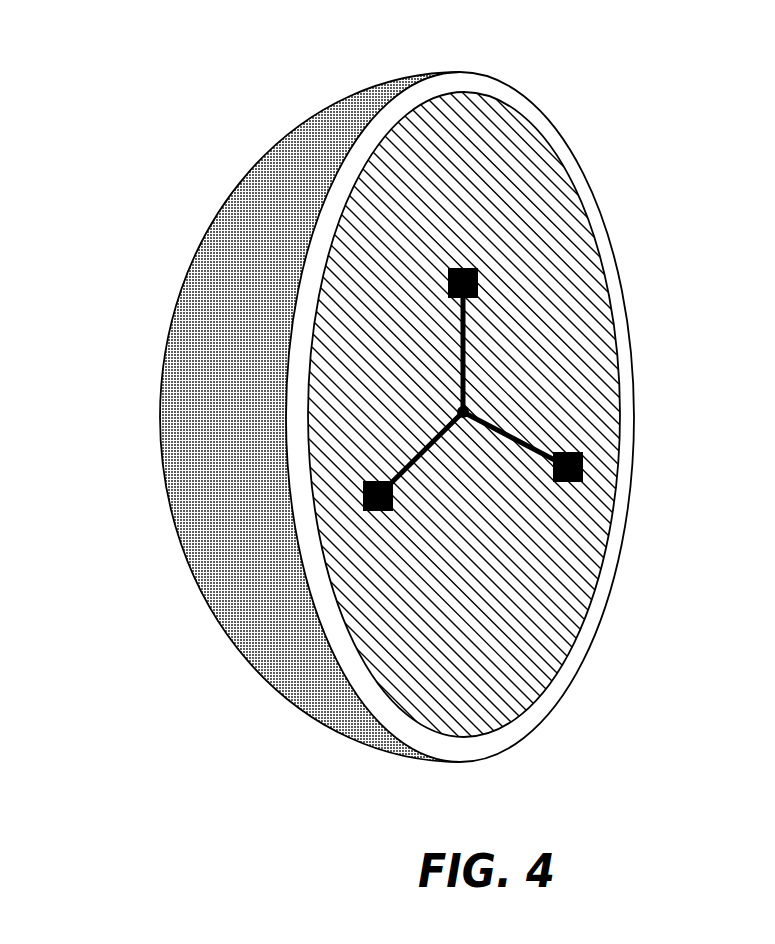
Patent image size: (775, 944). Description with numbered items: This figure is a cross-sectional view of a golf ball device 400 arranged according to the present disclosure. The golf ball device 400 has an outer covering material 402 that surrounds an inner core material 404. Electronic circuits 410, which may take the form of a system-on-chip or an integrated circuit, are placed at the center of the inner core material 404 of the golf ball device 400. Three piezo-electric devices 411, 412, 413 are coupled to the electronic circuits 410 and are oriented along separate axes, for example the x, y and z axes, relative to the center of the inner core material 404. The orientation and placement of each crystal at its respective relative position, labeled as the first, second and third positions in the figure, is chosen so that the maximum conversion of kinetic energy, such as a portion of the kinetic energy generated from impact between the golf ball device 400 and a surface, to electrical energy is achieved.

The golf ball device 400 is at (165, 408).
The outer covering material 402 is at (243, 532).
The inner core material 404 is at (468, 120).
The electronic circuits 410 is at (466, 412).
The piezo-electric device 411 is at (478, 268).
The piezo-electric device 412 is at (583, 465).
The piezo-electric device 413 is at (393, 497).